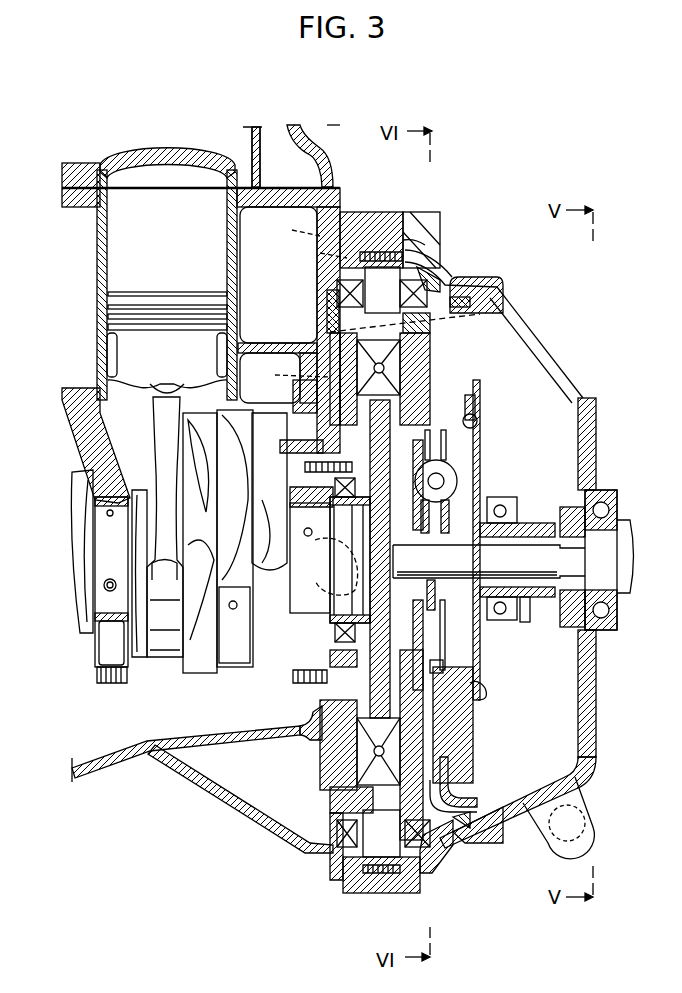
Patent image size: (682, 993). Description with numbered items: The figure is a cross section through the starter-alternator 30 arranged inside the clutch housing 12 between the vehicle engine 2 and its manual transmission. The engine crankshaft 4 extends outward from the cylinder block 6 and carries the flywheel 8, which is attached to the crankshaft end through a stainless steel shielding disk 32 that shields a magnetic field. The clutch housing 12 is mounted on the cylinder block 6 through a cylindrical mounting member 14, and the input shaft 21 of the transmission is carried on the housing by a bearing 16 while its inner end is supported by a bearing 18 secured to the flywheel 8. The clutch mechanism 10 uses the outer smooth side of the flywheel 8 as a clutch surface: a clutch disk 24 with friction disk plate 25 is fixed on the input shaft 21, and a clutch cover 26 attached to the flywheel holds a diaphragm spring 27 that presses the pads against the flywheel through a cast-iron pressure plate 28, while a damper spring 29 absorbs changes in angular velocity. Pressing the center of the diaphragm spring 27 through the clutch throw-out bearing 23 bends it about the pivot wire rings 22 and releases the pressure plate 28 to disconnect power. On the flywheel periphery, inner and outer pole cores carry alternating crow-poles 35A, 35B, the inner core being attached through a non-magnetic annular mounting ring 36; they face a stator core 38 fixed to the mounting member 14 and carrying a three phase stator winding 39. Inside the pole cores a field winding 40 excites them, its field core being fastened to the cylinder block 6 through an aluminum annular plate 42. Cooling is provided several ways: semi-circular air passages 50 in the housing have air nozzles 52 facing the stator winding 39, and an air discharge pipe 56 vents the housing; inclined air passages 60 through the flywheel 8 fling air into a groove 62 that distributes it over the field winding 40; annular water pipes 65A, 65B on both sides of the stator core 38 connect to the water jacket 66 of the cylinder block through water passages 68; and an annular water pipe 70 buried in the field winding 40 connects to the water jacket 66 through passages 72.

The internal combustion engine 2 is at (70, 267).
The engine crankshaft 4 is at (300, 600).
The cylinder block 6 is at (290, 186).
The flywheel 8 is at (455, 386).
The clutch mechanism 10 is at (500, 489).
The clutch housing 12 is at (448, 856).
The cylindrical mounting member 14 is at (384, 235).
The bearing 16 is at (604, 610).
The bearing 18 is at (392, 580).
The input shaft 21 is at (588, 571).
The pivot wire rings 22 is at (488, 418).
The clutch throw-out bearing 23 is at (528, 600).
The clutch disk 24 is at (447, 645).
The friction disk plate 25 is at (457, 770).
The clutch cover 26 is at (488, 404).
The diaphragm spring 27 is at (480, 455).
The pressure plate 28 is at (470, 745).
The damper spring 29 is at (457, 484).
The starter-alternator 30 is at (333, 312).
The shielding disk 32 is at (292, 668).
The outer crow-poles 35A is at (427, 268).
The inner crow-poles 35B is at (333, 300).
The annular mounting ring 36 is at (433, 316).
The stator core 38 is at (373, 262).
The three phase stator winding 39 is at (432, 282).
The field winding 40 is at (448, 372).
The annular plate 42 is at (322, 342).
The air passages 50 is at (493, 295).
The air nozzles 52 is at (488, 293).
The air discharge pipe 56 is at (592, 830).
The air passages 60 is at (406, 565).
The groove 62 is at (525, 323).
The annular water pipe 65A is at (352, 230).
The annular water pipe 65B is at (408, 262).
The water jacket 66 is at (263, 261).
The water passages 68 is at (307, 237).
The annular water pipe 70 is at (402, 357).
The passages 72 is at (290, 373).